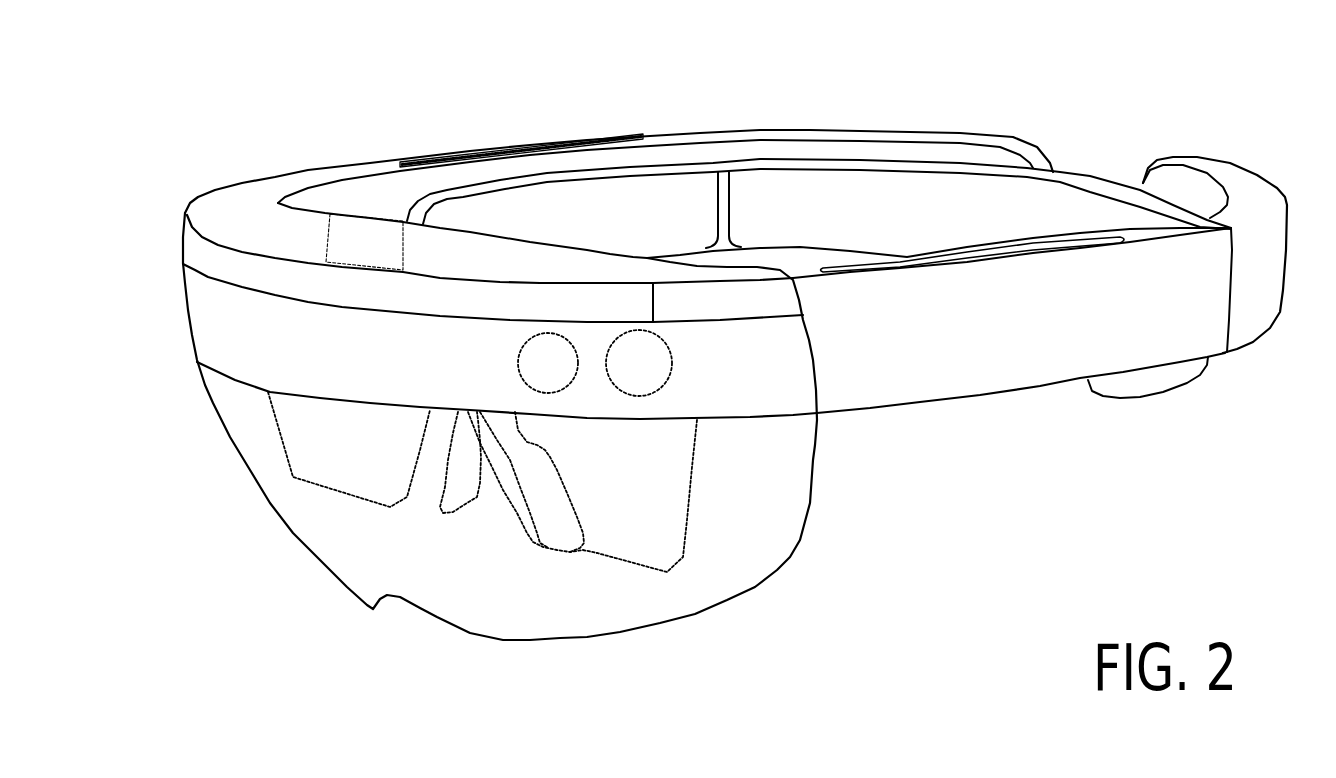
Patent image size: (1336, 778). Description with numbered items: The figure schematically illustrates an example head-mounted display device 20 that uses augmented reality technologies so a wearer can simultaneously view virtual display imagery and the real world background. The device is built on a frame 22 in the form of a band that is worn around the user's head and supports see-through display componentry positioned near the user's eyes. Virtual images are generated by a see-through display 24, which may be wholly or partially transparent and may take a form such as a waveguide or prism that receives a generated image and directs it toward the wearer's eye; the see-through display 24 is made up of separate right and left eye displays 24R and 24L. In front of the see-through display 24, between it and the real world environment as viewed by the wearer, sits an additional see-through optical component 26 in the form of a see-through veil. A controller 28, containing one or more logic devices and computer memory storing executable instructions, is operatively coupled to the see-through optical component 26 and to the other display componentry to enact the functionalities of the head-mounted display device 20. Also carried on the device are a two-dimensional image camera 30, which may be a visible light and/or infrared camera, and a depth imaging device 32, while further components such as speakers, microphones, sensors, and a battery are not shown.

The head-mounted display device 20 is at (1187, 67).
The frame 22 is at (1061, 333).
The see-through display 24 is at (693, 465).
The left eye display 24L is at (658, 553).
The right eye display 24R is at (391, 485).
The see-through optical component 26 is at (803, 541).
The controller 28 is at (378, 252).
The two-dimensional image camera 30 is at (560, 376).
The depth imaging device 32 is at (651, 376).